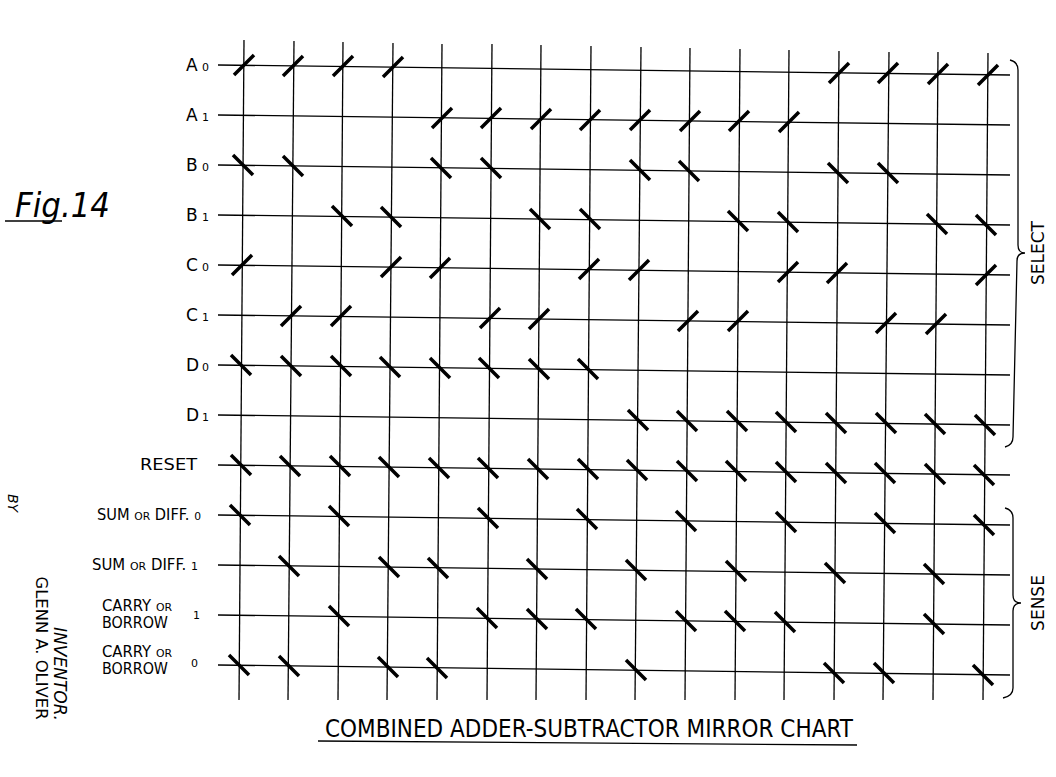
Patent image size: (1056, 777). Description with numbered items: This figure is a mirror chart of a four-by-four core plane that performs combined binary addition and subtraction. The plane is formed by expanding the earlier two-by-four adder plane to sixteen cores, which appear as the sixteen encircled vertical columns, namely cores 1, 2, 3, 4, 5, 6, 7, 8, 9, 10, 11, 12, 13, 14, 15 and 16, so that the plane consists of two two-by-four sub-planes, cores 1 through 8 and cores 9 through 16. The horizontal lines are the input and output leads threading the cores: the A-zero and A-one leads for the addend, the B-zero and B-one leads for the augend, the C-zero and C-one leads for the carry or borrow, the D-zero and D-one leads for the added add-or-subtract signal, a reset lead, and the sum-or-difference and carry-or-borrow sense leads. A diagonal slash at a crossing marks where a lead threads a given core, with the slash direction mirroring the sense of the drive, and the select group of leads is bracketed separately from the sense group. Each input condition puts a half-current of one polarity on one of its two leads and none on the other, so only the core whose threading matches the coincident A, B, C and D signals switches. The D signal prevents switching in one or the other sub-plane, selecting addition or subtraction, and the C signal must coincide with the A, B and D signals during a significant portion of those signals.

The column line 1 is at (244, 358).
The column line 2 is at (294, 358).
The column line 3 is at (343, 359).
The column line 4 is at (393, 359).
The column line 5 is at (442, 360).
The column line 6 is at (492, 360).
The column line 7 is at (542, 360).
The column line 8 is at (591, 361).
The column line 9 is at (641, 361).
The column line 10 is at (690, 362).
The column line 11 is at (740, 362).
The column line 12 is at (790, 363).
The column line 13 is at (839, 363).
The column line 14 is at (889, 364).
The column line 15 is at (938, 364).
The column line 16 is at (988, 364).